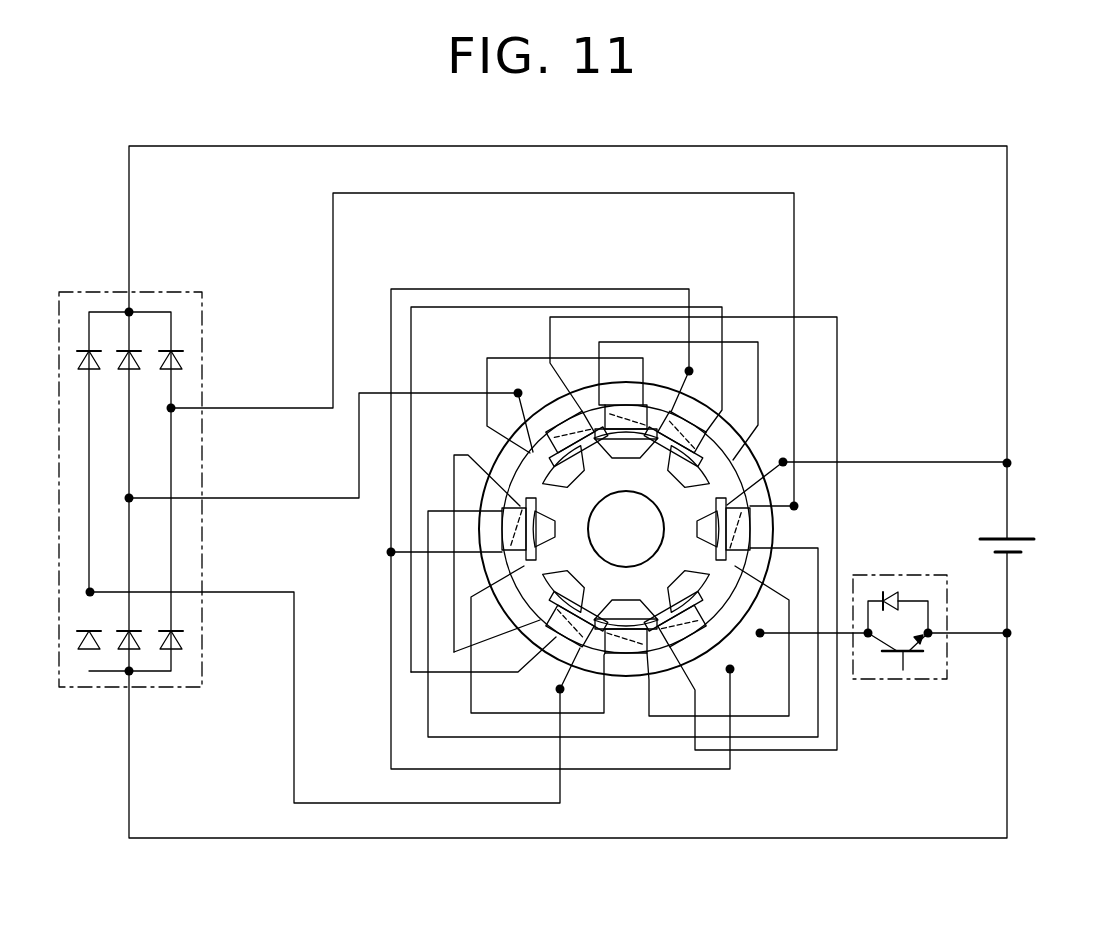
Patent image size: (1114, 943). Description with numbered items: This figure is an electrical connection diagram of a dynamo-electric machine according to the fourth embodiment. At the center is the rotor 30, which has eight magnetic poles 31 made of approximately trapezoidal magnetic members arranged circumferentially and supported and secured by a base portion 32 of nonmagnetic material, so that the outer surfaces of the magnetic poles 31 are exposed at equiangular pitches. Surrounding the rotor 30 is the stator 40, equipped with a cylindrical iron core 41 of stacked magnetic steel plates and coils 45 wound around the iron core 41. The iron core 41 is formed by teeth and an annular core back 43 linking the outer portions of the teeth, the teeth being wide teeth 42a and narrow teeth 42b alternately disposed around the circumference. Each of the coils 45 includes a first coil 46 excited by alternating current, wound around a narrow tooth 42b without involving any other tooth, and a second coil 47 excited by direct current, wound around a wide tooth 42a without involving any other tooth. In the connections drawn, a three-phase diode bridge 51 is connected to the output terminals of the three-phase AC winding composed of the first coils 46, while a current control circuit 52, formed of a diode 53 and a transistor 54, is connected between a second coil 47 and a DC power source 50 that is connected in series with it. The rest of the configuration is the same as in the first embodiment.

The rotor 30 is at (626, 678).
The magnetic pole 31 is at (707, 535).
The base portion 32 is at (653, 575).
The stator 40 is at (620, 566).
The iron core 41 is at (738, 642).
The wide tooth 42a is at (625, 400).
The narrow tooth 42b is at (685, 415).
The core back 43 is at (758, 557).
The coil 45 is at (554, 384).
The first coil 46 is at (555, 430).
The second coil 47 is at (488, 247).
The DC power source 50 is at (1030, 537).
The three-phase diode bridge 51 is at (150, 292).
The current control circuit 52 is at (911, 622).
The diode 53 is at (893, 590).
The transistor 54 is at (903, 670).